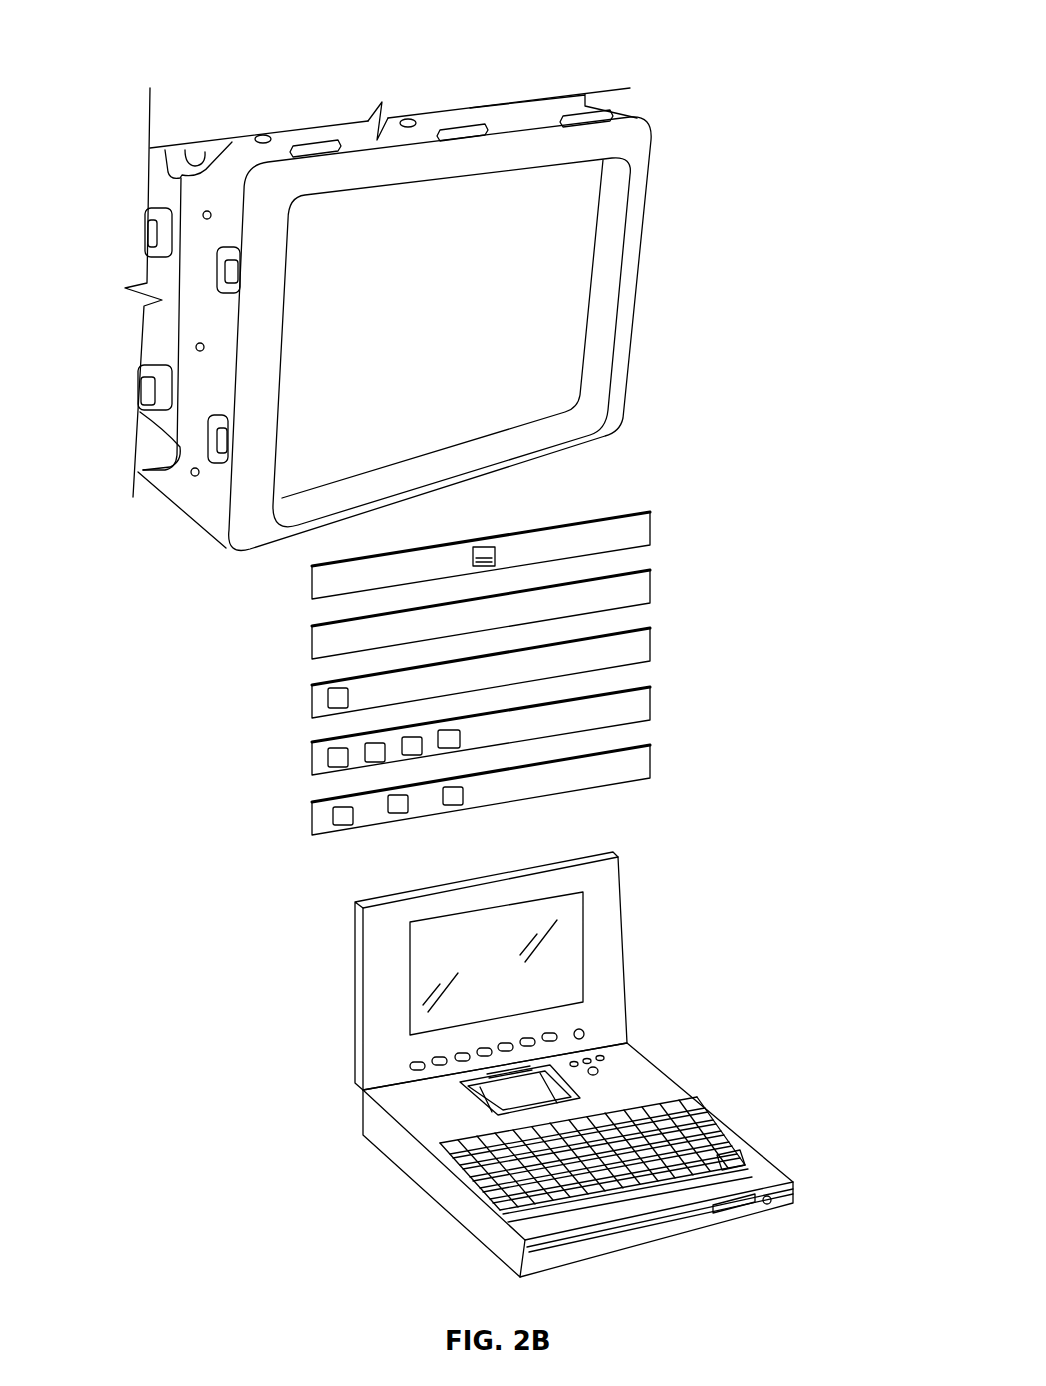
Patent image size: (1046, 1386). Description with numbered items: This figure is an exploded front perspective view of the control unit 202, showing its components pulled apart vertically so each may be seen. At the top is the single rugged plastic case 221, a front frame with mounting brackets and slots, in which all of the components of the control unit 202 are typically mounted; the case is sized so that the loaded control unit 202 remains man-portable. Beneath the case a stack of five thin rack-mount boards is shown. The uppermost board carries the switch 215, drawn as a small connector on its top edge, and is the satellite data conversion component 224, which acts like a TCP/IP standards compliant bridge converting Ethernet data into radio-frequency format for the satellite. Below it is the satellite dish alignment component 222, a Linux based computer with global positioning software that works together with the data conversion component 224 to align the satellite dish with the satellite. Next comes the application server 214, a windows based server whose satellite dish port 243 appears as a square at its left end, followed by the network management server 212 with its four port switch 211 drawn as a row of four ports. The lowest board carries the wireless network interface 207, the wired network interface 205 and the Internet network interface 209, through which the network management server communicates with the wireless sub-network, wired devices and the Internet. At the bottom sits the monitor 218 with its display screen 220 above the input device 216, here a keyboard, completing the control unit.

The control unit 202 is at (737, 60).
The rugged plastic case 221 is at (195, 363).
The switch 215 is at (482, 546).
The satellite data conversion component 224 is at (643, 590).
The satellite dish alignment component 222 is at (643, 648).
The application server 214 is at (643, 706).
The satellite dish port 243 is at (322, 697).
The network management server 212 is at (643, 765).
The four port switch 211 is at (302, 762).
The wireless network interface 207 is at (330, 813).
The wired network interface 205 is at (398, 818).
The Internet network interface 209 is at (455, 806).
The display screen 220 is at (570, 921).
The monitor 218 is at (627, 983).
The input device 216 is at (672, 1107).